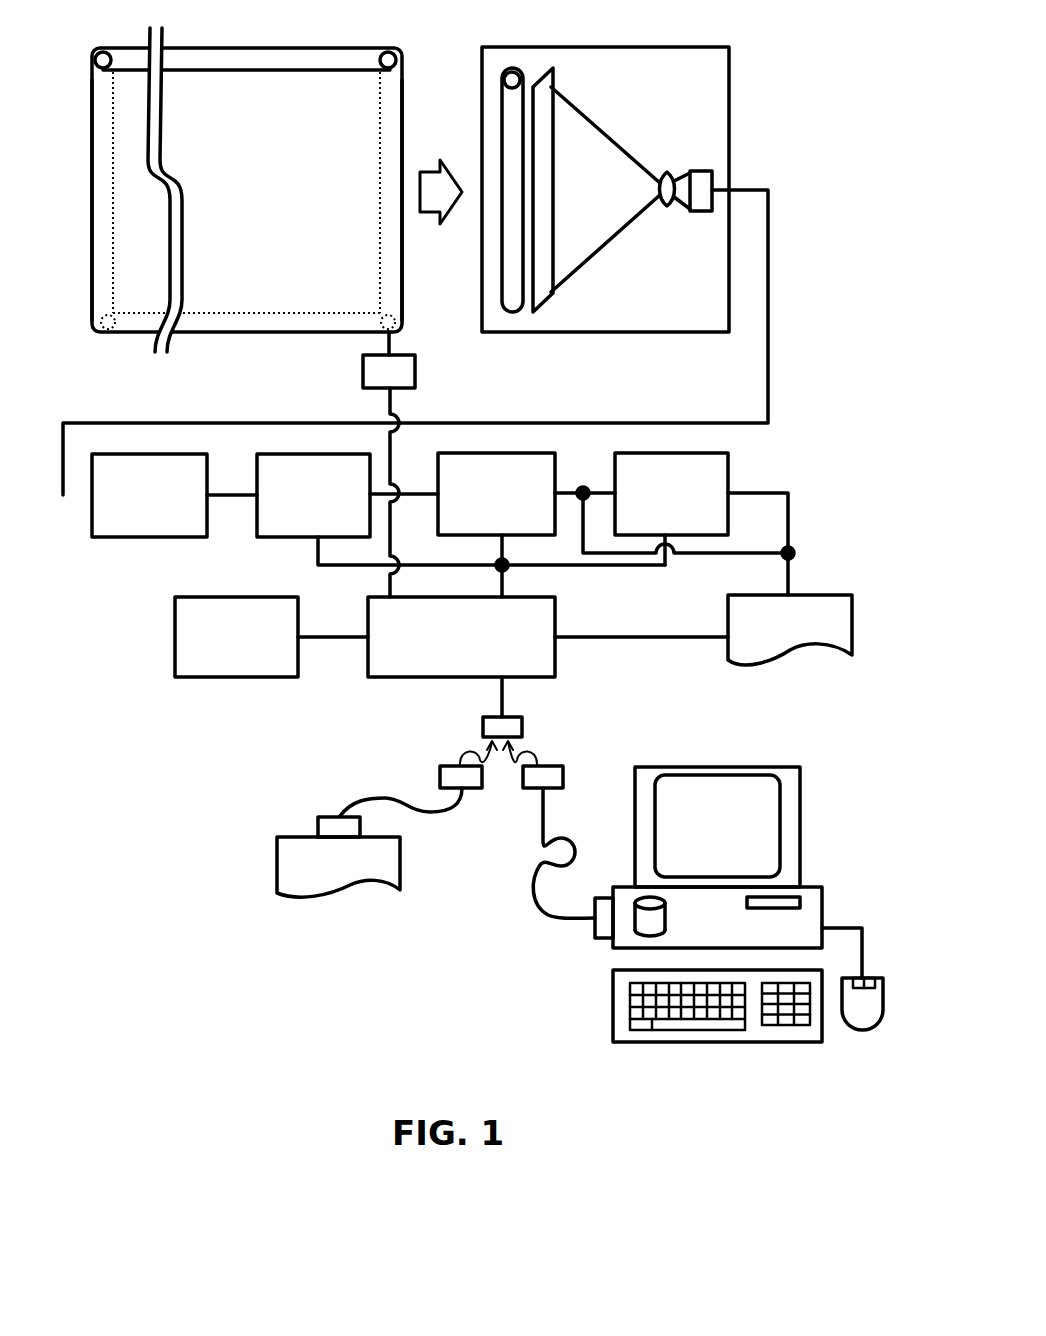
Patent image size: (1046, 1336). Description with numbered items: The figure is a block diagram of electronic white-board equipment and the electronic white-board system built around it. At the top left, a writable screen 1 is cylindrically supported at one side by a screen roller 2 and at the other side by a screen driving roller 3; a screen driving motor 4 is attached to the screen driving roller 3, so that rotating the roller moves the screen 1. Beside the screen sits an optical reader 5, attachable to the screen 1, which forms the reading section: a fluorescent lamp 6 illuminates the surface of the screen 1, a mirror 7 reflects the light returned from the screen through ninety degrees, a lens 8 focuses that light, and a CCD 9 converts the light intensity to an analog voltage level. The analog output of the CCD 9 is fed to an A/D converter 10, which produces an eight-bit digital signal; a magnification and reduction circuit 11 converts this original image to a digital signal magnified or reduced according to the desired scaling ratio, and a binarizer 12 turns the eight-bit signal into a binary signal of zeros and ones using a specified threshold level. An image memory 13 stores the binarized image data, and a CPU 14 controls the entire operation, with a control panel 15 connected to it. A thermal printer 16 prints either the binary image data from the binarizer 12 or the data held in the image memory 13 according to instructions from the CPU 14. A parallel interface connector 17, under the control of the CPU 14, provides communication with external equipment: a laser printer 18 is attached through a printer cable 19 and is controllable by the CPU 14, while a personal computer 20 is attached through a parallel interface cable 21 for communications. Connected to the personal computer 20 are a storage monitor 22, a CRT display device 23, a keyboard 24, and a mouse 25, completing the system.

The writable screen 1 is at (122, 335).
The screen roller 2 is at (102, 223).
The screen driving roller 3 is at (390, 110).
The screen driving motor 4 is at (415, 372).
The optical reader 5 is at (624, 197).
The fluorescent lamp 6 is at (513, 300).
The mirror 7 is at (545, 140).
The lens 8 is at (670, 203).
The CCD 9 is at (705, 178).
The A/D converter 10 is at (147, 537).
The magnification and reduction circuit 11 is at (288, 537).
The binarizer 12 is at (555, 480).
The image memory 13 is at (728, 477).
The CPU 14 is at (378, 680).
The control panel 15 is at (213, 680).
The thermal printer 16 is at (830, 593).
The parallel interface connector 17 is at (522, 717).
The laser printer 18 is at (275, 868).
The printer cable 19 is at (420, 817).
The personal computer 20 is at (808, 915).
The parallel interface cable 21 is at (528, 902).
The storage monitor 22 is at (645, 930).
The CRT display device 23 is at (782, 827).
The keyboard 24 is at (667, 1017).
The mouse 25 is at (878, 980).